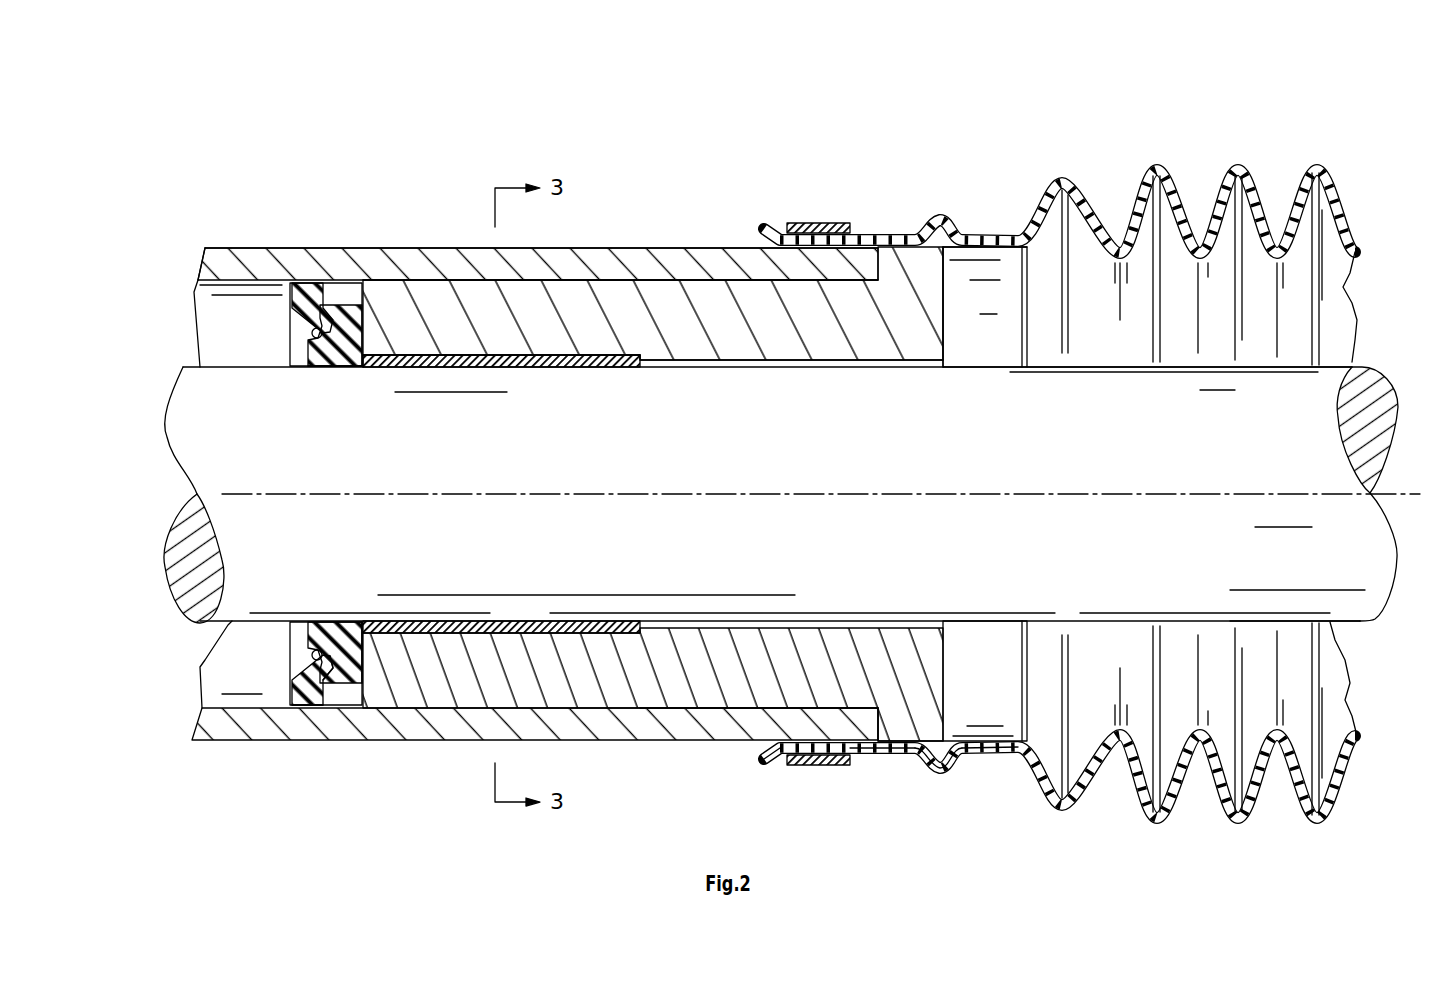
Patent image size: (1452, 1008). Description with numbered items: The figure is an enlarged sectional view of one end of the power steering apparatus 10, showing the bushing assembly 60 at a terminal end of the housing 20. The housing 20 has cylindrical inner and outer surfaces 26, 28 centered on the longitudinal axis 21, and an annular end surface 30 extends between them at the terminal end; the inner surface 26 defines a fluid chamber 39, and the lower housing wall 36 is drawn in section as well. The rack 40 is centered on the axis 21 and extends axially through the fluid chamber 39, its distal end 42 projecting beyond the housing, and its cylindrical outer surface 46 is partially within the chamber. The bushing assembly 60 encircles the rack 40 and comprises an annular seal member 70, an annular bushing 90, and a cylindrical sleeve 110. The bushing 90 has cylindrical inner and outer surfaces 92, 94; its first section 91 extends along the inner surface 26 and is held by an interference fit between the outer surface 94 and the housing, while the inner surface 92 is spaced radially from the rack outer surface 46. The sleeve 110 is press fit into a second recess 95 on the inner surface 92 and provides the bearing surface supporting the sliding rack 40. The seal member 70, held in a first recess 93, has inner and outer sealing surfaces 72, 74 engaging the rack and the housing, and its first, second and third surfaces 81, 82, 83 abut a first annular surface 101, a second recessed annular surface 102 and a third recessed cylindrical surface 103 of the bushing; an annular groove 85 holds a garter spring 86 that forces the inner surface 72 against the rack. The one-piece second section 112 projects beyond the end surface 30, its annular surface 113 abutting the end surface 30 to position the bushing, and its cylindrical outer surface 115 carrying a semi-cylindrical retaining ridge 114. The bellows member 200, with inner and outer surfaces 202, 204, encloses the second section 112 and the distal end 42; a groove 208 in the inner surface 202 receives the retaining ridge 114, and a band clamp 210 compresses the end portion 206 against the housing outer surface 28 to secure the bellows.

The steering apparatus 10 is at (226, 157).
The housing 20 is at (268, 272).
The longitudinal axis 21 is at (1420, 492).
The inner surface 26 is at (215, 295).
The outer surface 28 is at (218, 247).
The end surface 30 is at (882, 242).
The housing lower wall 36 is at (635, 750).
The fluid chamber 39 is at (233, 679).
The rack 40 is at (1300, 415).
The distal end 42 is at (1300, 352).
The outer surface 46 is at (1360, 627).
The bushing assembly 60 is at (626, 182).
The seal member 70 is at (350, 292).
The inner sealing surface 72 is at (335, 368).
The outer sealing surface 74 is at (305, 710).
The first surface 81 is at (338, 293).
The second surface 82 is at (370, 350).
The third surface 83 is at (458, 358).
The annular groove 85 is at (314, 651).
The garter spring 86 is at (322, 648).
The bushing 90 is at (444, 270).
The first section 91 is at (488, 717).
The inner surface 92 is at (660, 362).
The first recess 93 is at (345, 695).
The outer surface 94 is at (612, 300).
The second recess 95 is at (546, 376).
The first annular surface 101 is at (313, 700).
The second recessed annular surface 102 is at (362, 665).
The third recessed cylindrical surface 103 is at (330, 672).
The sleeve 110 is at (562, 338).
The second section 112 is at (775, 716).
The annular surface 113 is at (835, 720).
The retaining ridge 114 is at (930, 238).
The outer surface 115 is at (937, 345).
The bellows member 200 is at (1248, 153).
The inner surface 202 is at (995, 756).
The outer surface 204 is at (955, 775).
The end portion 206 is at (788, 791).
The groove 208 is at (900, 754).
The band clamp 210 is at (790, 230).